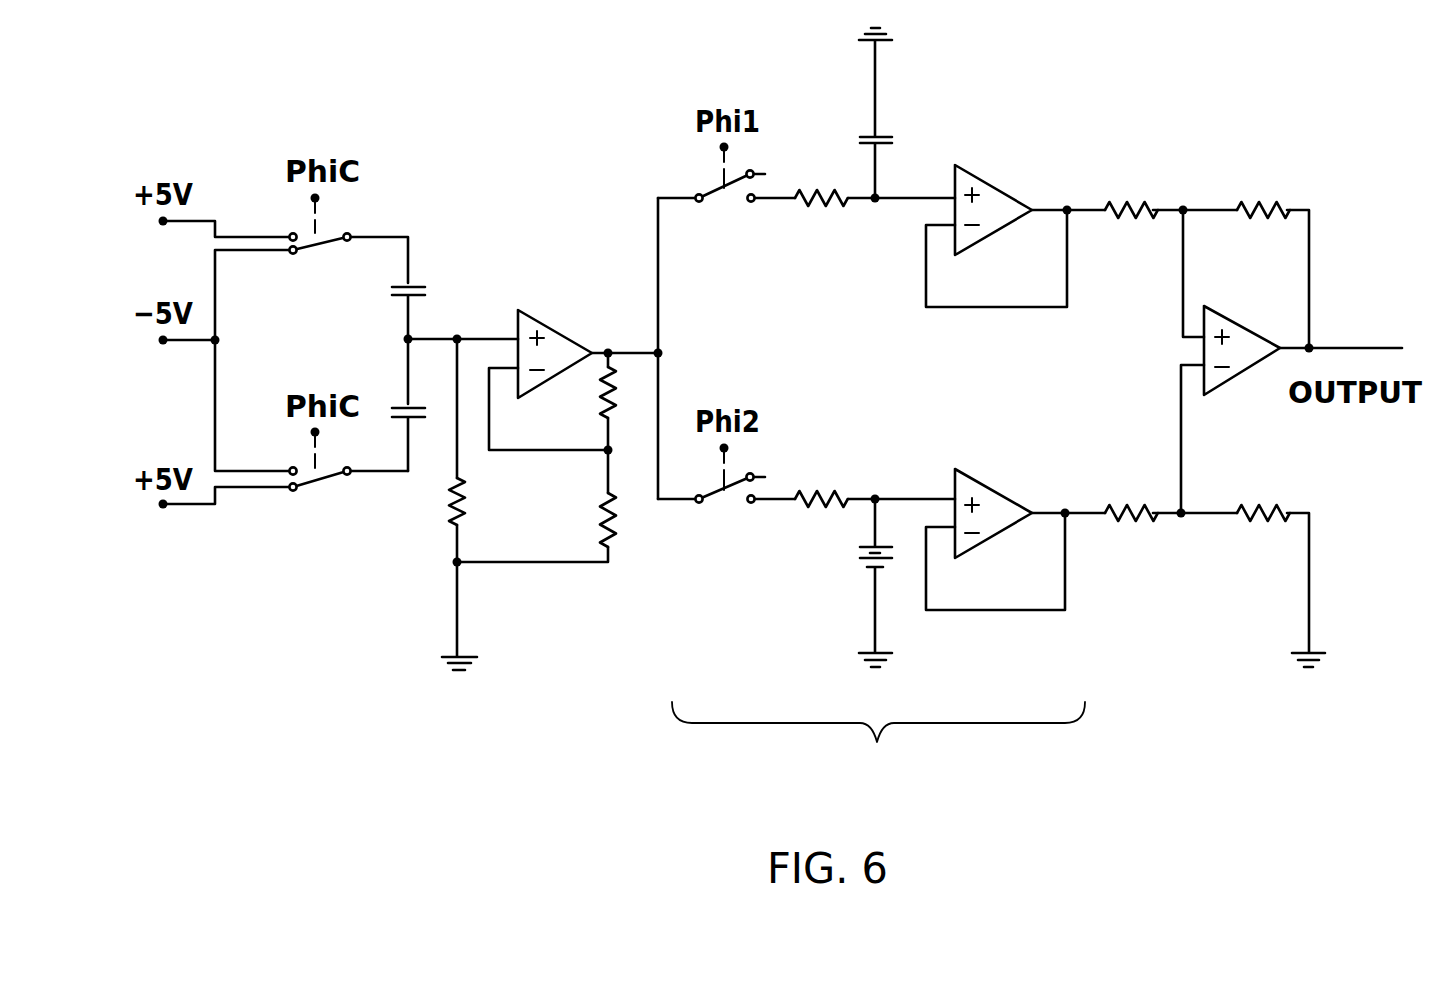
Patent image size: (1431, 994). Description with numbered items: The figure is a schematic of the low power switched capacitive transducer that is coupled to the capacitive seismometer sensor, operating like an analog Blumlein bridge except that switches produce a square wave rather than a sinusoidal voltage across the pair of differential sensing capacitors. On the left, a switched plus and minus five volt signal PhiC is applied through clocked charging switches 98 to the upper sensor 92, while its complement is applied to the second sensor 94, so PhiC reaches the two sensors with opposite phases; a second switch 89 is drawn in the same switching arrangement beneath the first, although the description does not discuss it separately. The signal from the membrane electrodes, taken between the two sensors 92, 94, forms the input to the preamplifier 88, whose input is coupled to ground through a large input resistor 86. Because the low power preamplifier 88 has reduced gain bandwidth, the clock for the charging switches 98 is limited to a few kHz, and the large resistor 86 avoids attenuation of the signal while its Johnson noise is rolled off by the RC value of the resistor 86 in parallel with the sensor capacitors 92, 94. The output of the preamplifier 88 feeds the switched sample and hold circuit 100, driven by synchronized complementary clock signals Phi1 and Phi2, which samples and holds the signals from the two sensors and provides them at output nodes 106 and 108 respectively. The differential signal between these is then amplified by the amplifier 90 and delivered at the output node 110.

The input resistor 86 is at (453, 523).
The preamplifier 88 is at (533, 319).
The switch 89 is at (308, 484).
The amplifier 90 is at (1221, 386).
The upper sensor 92 is at (416, 285).
The second sensor 94 is at (407, 404).
The clocked charging switches 98 is at (326, 236).
The switched sample and hold circuit 100 is at (871, 408).
The output node 106 is at (1067, 208).
The output node 108 is at (1066, 516).
The output node 110 is at (1310, 346).